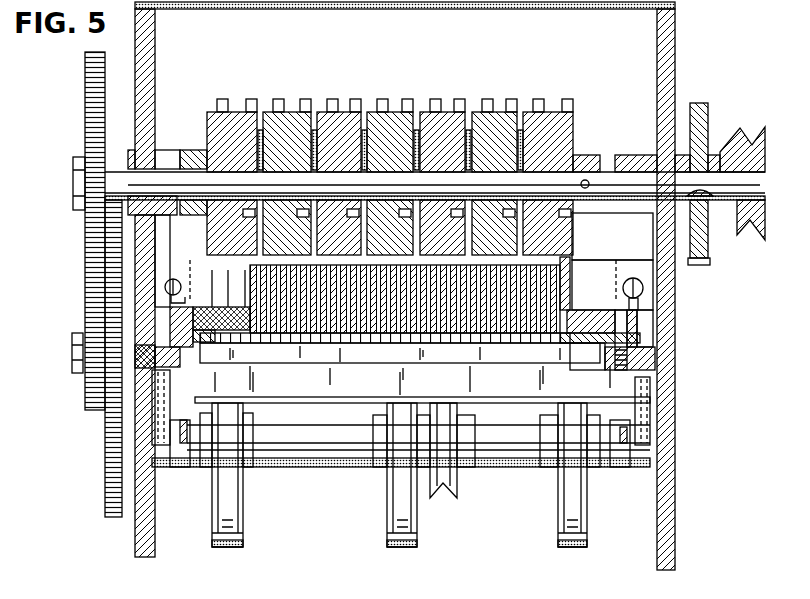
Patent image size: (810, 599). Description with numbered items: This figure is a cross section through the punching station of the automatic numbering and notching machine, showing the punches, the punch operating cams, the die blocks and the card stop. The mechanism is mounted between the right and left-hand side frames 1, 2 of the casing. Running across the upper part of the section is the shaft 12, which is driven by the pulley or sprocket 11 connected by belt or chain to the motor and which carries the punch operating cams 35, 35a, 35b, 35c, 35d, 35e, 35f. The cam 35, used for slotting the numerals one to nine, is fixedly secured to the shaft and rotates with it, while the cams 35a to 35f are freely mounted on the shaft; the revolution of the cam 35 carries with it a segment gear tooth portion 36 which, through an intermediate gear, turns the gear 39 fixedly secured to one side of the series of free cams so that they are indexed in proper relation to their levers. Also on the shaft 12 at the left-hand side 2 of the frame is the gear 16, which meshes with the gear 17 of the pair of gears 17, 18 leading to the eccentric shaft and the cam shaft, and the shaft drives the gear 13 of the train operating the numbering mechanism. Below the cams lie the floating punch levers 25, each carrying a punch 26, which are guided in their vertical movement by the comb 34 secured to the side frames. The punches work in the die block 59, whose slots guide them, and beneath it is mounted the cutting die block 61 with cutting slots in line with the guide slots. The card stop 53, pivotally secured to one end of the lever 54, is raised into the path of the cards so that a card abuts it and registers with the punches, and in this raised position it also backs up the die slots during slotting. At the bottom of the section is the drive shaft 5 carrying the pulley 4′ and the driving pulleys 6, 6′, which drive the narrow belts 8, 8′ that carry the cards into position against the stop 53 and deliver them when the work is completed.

The right-hand side frame 1 is at (673, 500).
The left-hand side frame 2 is at (134, 547).
The drive shaft 5 is at (318, 449).
The driving pulley 6 is at (557, 518).
The driving pulley 6′ is at (418, 536).
The belt 8 is at (568, 548).
The belt 8′ is at (397, 548).
The pulley 4′ is at (458, 492).
The pulley or sprocket 11 is at (764, 130).
The shaft 12 is at (165, 173).
The gear 13 is at (706, 105).
The gear 16 is at (85, 96).
The gear 17 is at (84, 318).
The gear 18 is at (110, 252).
The punch lever 25 is at (569, 267).
The punch 26 is at (343, 333).
The comb 34 is at (607, 261).
The punch operating cam 35 is at (571, 116).
The punch operating cam 35a is at (501, 112).
The punch operating cam 35b is at (423, 112).
The punch operating cam 35c is at (370, 112).
The punch operating cam 35d is at (318, 112).
The punch operating cam 35e is at (268, 112).
The punch operating cam 35f is at (221, 112).
The segment gear tooth portion 36 is at (573, 233).
The gear 39 is at (521, 112).
The stop 53 is at (526, 393).
The lever 54 is at (183, 468).
The die block 59 is at (636, 322).
The cutting die block 61 is at (600, 350).